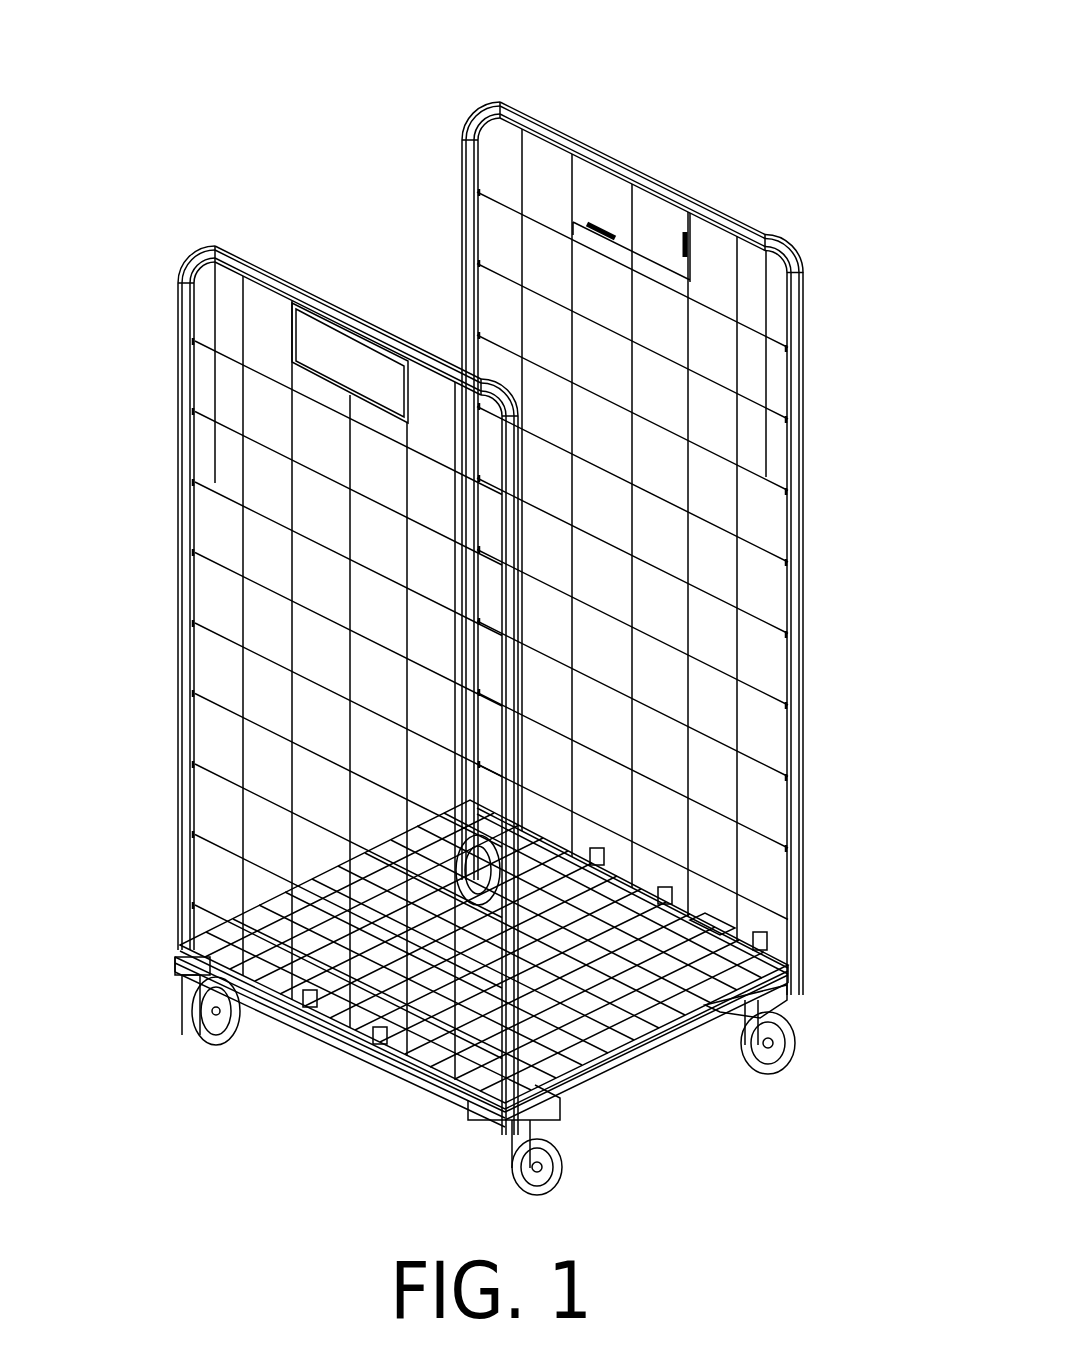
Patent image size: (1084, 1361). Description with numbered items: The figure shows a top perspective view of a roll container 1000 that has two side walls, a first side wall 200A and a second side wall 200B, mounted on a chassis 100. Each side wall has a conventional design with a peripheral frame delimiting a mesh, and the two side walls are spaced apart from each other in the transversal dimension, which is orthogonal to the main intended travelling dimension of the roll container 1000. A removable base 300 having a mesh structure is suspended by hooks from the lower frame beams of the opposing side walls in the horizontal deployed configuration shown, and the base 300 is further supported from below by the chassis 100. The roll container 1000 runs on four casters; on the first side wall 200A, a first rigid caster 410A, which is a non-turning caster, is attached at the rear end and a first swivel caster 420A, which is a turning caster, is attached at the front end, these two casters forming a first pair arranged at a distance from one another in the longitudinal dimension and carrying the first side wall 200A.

The roll container 1000 is at (363, 244).
The first side wall 200A is at (233, 257).
The second side wall 200B is at (598, 153).
The chassis 100 is at (640, 1038).
The removable base 300 is at (703, 948).
The first rigid caster 410A is at (213, 1045).
The first swivel caster 420A is at (525, 1172).